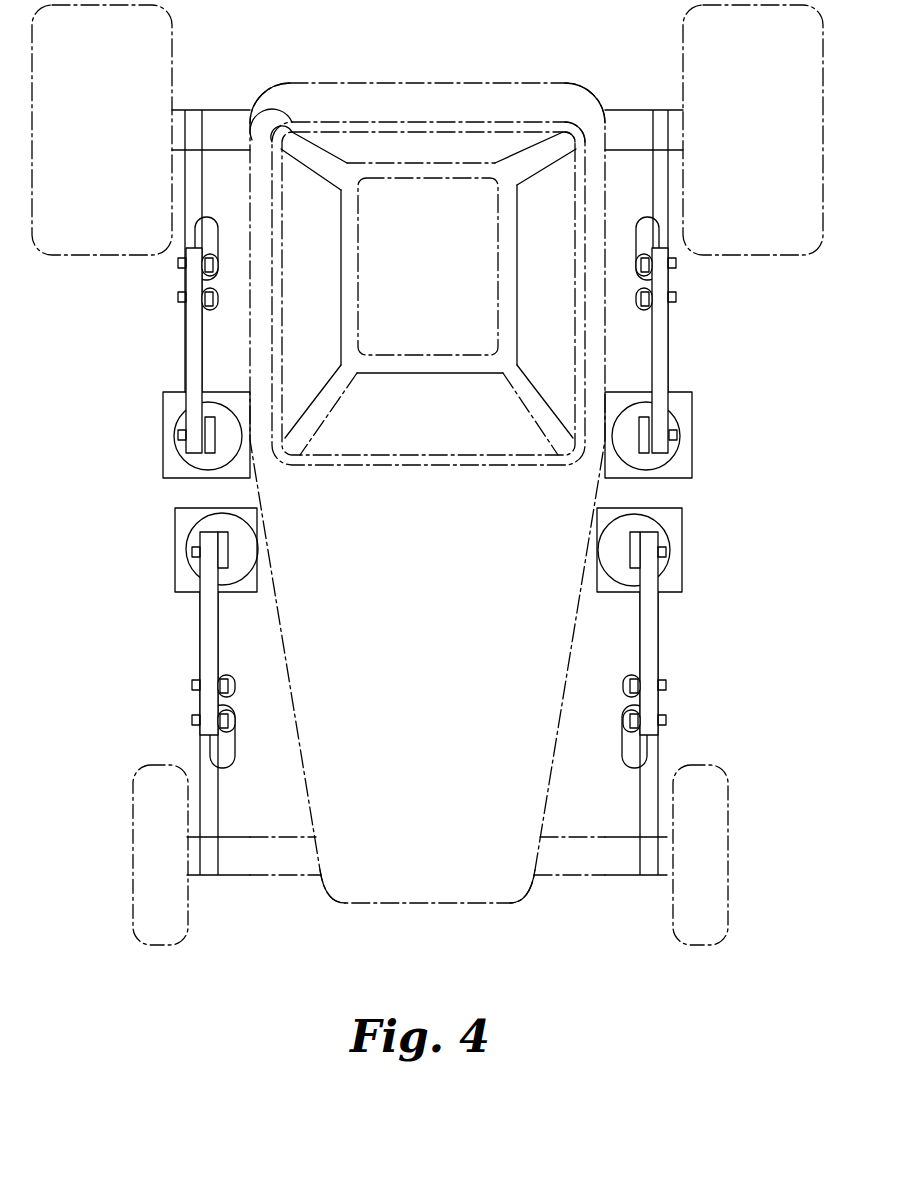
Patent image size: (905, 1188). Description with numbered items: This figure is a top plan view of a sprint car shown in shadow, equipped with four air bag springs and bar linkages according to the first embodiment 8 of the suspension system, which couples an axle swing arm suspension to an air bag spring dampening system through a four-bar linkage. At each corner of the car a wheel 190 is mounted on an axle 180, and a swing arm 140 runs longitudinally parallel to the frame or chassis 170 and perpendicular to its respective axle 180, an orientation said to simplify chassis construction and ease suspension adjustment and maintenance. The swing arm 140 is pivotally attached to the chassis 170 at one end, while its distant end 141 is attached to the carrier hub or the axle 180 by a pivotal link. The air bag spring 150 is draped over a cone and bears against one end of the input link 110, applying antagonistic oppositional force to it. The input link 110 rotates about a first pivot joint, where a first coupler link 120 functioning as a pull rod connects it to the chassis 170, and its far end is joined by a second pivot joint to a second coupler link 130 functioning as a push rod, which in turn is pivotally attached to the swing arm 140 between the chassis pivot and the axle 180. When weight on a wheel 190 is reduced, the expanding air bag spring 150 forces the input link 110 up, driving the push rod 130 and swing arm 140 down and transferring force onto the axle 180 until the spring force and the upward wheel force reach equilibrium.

The first embodiment 8 is at (155, 320).
The input link 110 is at (193, 363).
The first coupler link 120 is at (220, 300).
The second coupler link 130 is at (213, 247).
The swing arm 140 is at (195, 173).
The distant end of the swing arm 141 is at (660, 118).
The air bag spring 150 is at (163, 470).
The frame or chassis 170 is at (498, 247).
The axle 180 is at (221, 128).
The wheel 190 is at (108, 159).